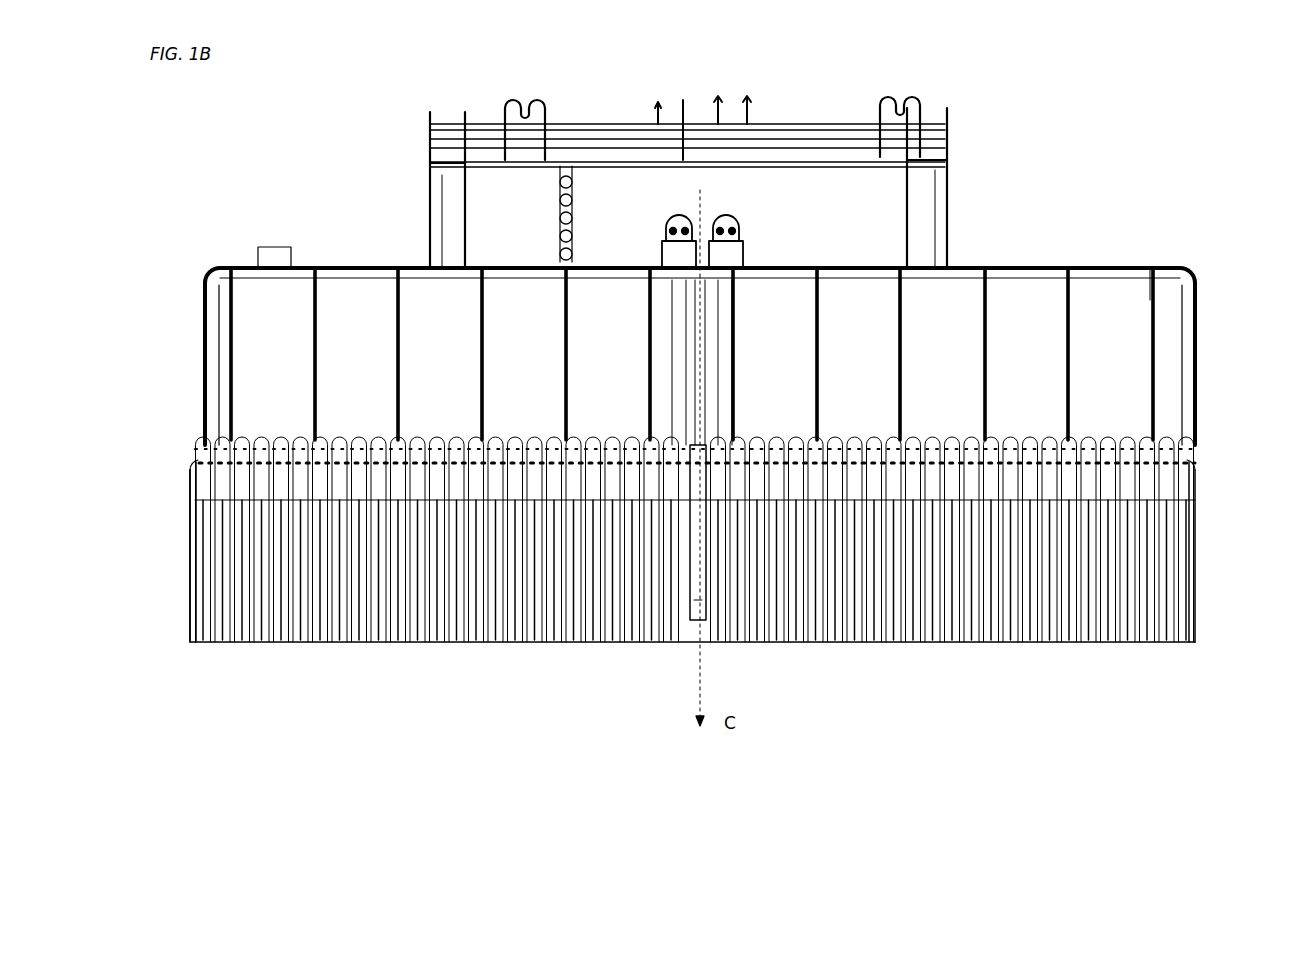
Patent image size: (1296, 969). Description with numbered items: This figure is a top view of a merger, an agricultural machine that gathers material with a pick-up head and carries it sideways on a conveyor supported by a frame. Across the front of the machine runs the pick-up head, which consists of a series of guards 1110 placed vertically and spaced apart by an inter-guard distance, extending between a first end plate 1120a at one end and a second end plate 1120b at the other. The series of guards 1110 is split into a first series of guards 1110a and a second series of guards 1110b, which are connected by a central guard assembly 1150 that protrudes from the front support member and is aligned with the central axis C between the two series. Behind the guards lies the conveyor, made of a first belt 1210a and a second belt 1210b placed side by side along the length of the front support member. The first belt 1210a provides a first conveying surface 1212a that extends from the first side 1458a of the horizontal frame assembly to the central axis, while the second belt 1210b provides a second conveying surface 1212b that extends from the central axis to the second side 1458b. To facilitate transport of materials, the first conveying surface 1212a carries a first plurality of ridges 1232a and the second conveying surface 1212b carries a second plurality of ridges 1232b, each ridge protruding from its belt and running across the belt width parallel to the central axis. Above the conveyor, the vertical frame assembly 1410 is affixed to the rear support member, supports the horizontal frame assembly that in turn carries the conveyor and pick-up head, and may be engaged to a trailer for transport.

The series of guards 1110 is at (1200, 720).
The first series of guards 1110a is at (680, 659).
The second series of guards 1110b is at (1184, 655).
The first end plate 1120a is at (185, 530).
The second end plate 1120b is at (1196, 458).
The central guard assembly 1150 is at (690, 620).
The first belt 1210a is at (355, 268).
The second belt 1210b is at (1043, 265).
The first conveying surface 1212a is at (440, 362).
The second conveying surface 1212b is at (942, 362).
The first plurality of ridges 1232a is at (292, 270).
The second plurality of ridges 1232b is at (1148, 300).
The vertical frame assembly 1410 is at (930, 83).
The first side 1458a is at (176, 312).
The second side 1458b is at (1210, 312).